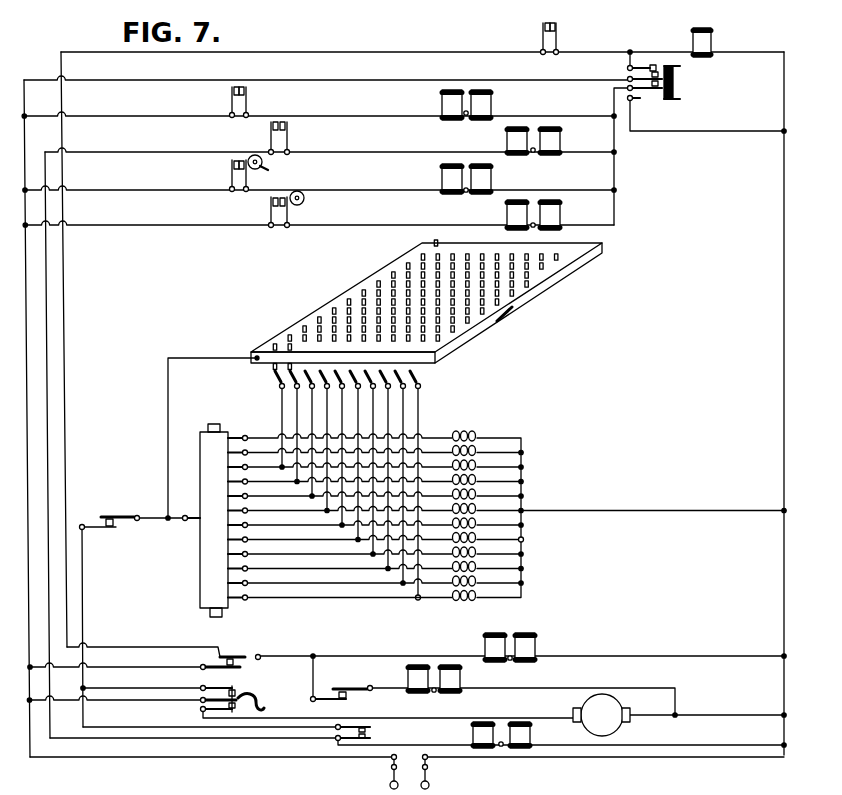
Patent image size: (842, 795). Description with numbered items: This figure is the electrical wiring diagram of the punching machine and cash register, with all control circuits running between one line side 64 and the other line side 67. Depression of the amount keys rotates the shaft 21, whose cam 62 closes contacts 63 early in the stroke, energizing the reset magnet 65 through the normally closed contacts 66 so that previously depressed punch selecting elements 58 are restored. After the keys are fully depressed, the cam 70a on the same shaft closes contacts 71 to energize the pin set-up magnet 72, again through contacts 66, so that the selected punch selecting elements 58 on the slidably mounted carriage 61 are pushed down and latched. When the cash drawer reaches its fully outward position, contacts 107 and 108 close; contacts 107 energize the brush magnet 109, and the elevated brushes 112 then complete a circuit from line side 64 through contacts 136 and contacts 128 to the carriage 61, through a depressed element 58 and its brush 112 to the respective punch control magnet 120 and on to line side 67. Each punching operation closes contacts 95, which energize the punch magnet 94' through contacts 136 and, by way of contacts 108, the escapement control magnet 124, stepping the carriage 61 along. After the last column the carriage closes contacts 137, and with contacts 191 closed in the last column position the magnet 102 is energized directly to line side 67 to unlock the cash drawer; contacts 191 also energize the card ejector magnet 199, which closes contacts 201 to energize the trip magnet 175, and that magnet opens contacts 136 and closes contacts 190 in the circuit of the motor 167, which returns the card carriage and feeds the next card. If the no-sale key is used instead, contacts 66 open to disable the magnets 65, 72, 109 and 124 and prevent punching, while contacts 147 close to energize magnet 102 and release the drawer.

The contacts 137 is at (540, 40).
The contacts 147 is at (642, 67).
The magnet 102 is at (704, 43).
The normally closed contacts 66 is at (640, 98).
The line side 67 is at (784, 119).
The contacts 107 is at (247, 101).
The contacts 108 is at (288, 137).
The magnet 109 is at (441, 106).
The escapement control magnet 124 is at (554, 139).
The cam 62 is at (252, 155).
The contacts 63 is at (230, 173).
The shaft 21 is at (268, 170).
The magnet 65 is at (484, 177).
The contacts 71 is at (269, 212).
The cam 70a is at (303, 203).
The pin set-up magnet 72 is at (553, 213).
The carriage 61 is at (457, 345).
The punch selecting elements 58 is at (278, 370).
The brushes 112 is at (302, 386).
The line side 64 is at (26, 414).
The punch control magnets 120 is at (468, 465).
The contacts 128 is at (118, 530).
The contacts 191 is at (218, 656).
The normally closed contacts 136 is at (243, 690).
The contacts 190 is at (266, 704).
The contacts 201 is at (366, 686).
The trip magnet 175 is at (416, 670).
The card ejector magnet 199 is at (485, 644).
The contacts 95 is at (374, 733).
The punch magnet 94' is at (482, 735).
The motor 167 is at (590, 722).